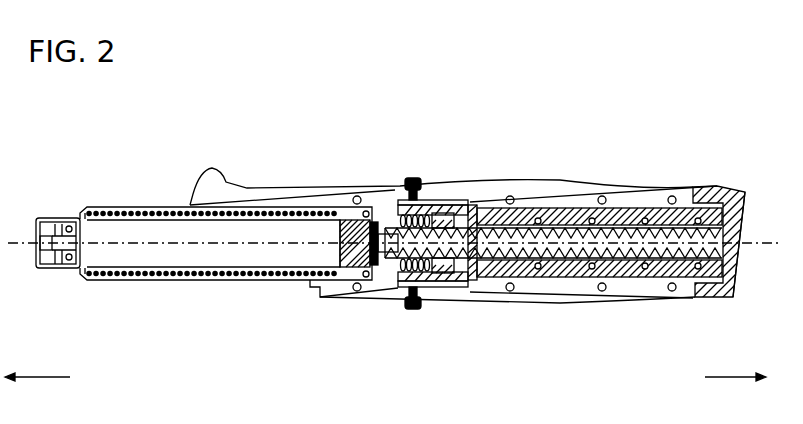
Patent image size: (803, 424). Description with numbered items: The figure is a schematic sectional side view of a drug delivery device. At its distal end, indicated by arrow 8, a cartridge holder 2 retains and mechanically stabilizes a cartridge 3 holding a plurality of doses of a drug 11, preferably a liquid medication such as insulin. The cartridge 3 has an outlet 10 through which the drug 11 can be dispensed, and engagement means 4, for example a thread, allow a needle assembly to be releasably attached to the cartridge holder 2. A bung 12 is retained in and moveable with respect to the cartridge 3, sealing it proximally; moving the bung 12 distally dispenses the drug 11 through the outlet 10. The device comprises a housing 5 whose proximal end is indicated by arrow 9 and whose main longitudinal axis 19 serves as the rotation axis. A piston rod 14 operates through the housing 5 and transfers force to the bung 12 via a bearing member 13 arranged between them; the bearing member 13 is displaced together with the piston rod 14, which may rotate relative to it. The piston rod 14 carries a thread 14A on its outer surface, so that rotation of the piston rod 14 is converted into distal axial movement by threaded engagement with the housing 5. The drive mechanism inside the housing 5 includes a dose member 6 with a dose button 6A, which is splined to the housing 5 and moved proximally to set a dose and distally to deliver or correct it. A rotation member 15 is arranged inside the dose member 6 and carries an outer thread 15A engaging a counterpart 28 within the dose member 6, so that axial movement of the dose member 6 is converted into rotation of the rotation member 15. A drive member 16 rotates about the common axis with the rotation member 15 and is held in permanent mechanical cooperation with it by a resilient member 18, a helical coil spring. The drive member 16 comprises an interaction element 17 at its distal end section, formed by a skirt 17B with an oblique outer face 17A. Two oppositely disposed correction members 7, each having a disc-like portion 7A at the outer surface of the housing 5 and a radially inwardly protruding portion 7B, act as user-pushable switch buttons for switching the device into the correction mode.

The cartridge holder 2 is at (145, 283).
The cartridge 3 is at (205, 283).
The engagement means 4 is at (51, 210).
The housing 5 is at (588, 305).
The dose member 6 is at (700, 186).
The dose button 6A is at (742, 222).
The correction member 7 is at (412, 309).
The disc-like portion 7A is at (411, 178).
The protruding portion 7B is at (400, 198).
The arrow 8 is at (37, 386).
The arrow 9 is at (735, 386).
The outlet 10 is at (36, 250).
The drug 11 is at (151, 208).
The bung 12 is at (340, 210).
The bearing member 13 is at (376, 205).
The piston rod 14 is at (623, 207).
The thread 14A is at (520, 280).
The rotation member 15 is at (662, 207).
The outer thread 15A is at (648, 280).
The drive member 16 is at (472, 203).
The interaction element 17 is at (443, 212).
The oblique outer face 17A is at (404, 288).
The skirt 17B is at (428, 280).
The resilient member 18 is at (432, 226).
The main longitudinal axis 19 is at (754, 246).
The counterpart 28 is at (540, 196).